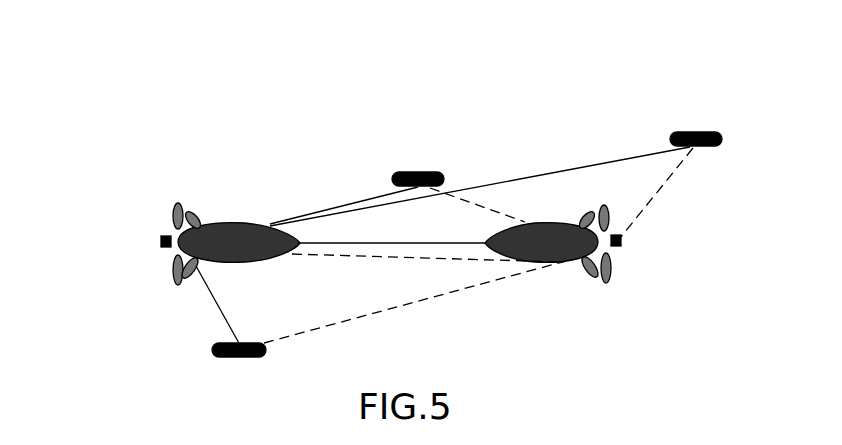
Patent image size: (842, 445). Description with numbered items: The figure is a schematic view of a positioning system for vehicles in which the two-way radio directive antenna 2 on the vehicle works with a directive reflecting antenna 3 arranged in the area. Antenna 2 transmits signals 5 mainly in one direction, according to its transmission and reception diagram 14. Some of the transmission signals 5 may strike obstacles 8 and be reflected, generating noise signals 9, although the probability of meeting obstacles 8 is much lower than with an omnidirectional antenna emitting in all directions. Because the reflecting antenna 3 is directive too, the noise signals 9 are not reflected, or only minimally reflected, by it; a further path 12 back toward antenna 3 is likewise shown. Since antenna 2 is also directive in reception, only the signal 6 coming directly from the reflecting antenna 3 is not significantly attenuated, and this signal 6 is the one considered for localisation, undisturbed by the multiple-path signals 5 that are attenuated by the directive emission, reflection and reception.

The two-way radio directive antenna 2 is at (162, 240).
The reflecting antenna 3 is at (618, 247).
The transmission signals 5 is at (310, 212).
The signal 6 is at (372, 258).
The obstacles 8 is at (421, 172).
The noise signals 9 is at (497, 200).
The dashed tether line 12 is at (660, 196).
The transmission and reception diagram 14 is at (196, 225).